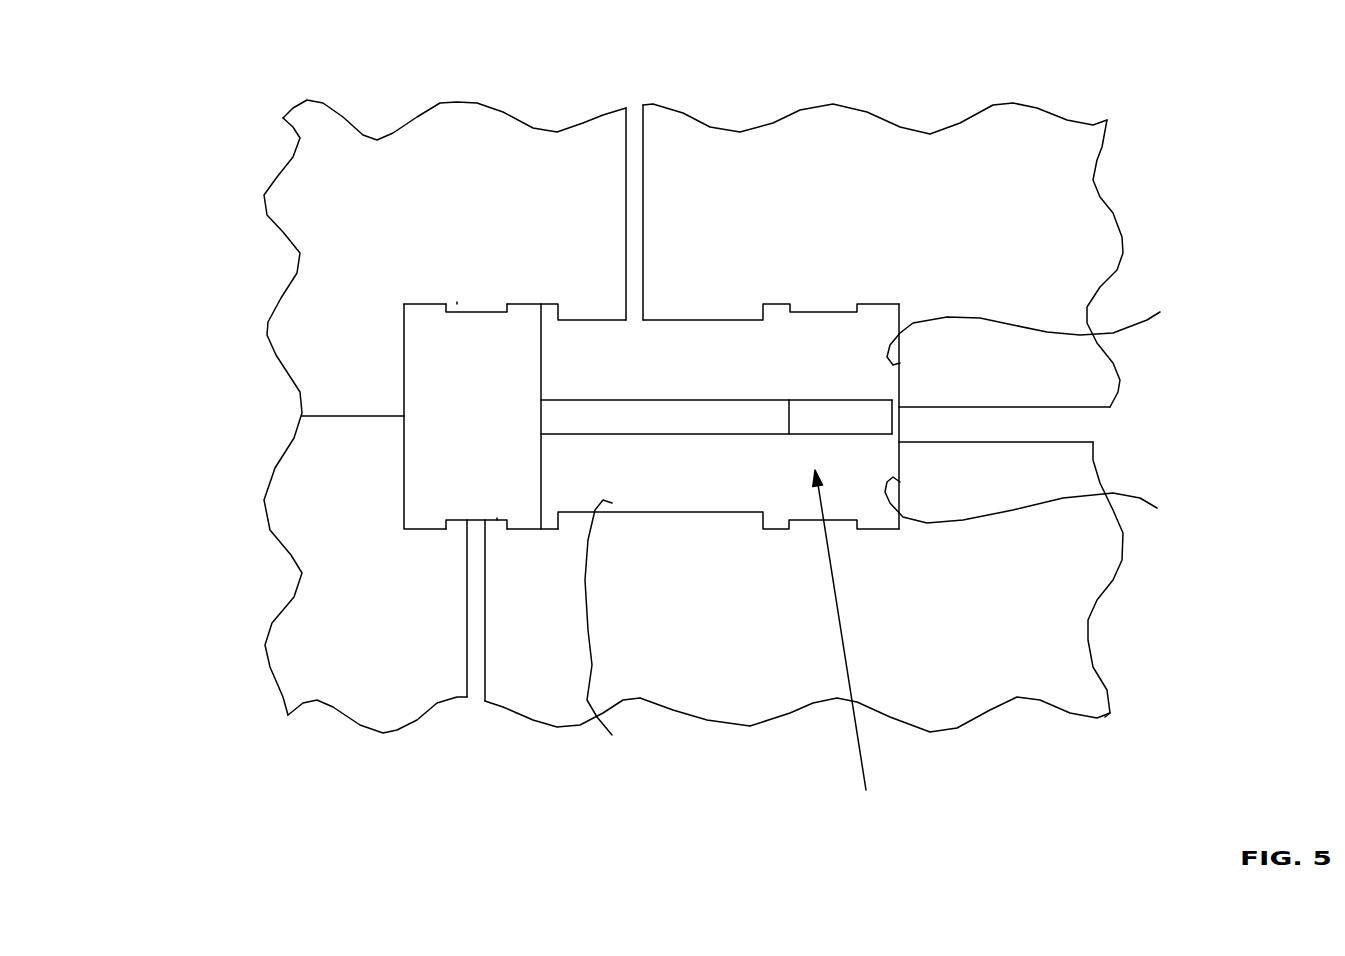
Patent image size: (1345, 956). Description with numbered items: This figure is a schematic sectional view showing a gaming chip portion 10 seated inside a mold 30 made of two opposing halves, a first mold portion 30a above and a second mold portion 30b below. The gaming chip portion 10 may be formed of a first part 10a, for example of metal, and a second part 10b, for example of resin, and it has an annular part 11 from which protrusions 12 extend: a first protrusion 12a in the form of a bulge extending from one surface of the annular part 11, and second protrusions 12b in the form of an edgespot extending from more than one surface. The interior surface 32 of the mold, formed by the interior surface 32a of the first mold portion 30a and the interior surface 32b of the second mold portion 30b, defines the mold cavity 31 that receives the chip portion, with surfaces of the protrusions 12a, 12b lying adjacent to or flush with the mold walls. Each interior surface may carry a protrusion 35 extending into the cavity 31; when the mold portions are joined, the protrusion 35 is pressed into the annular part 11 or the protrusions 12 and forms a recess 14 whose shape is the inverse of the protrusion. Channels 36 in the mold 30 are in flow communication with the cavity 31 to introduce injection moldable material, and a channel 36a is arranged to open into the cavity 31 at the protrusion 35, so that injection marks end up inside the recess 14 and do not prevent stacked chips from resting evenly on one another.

The gaming chip portion 10 is at (866, 790).
The first part 10a is at (716, 596).
The second part 10b is at (572, 546).
The annular part 11 is at (844, 246).
The protrusions 12 is at (801, 238).
The first protrusion 12a is at (1055, 381).
The second protrusions 12b is at (566, 195).
The recess 14 is at (429, 416).
The mold 30 is at (720, 416).
The first mold portion 30a is at (933, 255).
The second mold portion 30b is at (927, 587).
The mold cavity 31 is at (775, 410).
The interior surface 32 is at (311, 381).
The interior surface of first mold portion 32a is at (1043, 322).
The interior surface of second mold portion 32b is at (896, 617).
The protrusion 35 is at (596, 419).
The channel 36 is at (902, 237).
The channel 36a is at (472, 658).